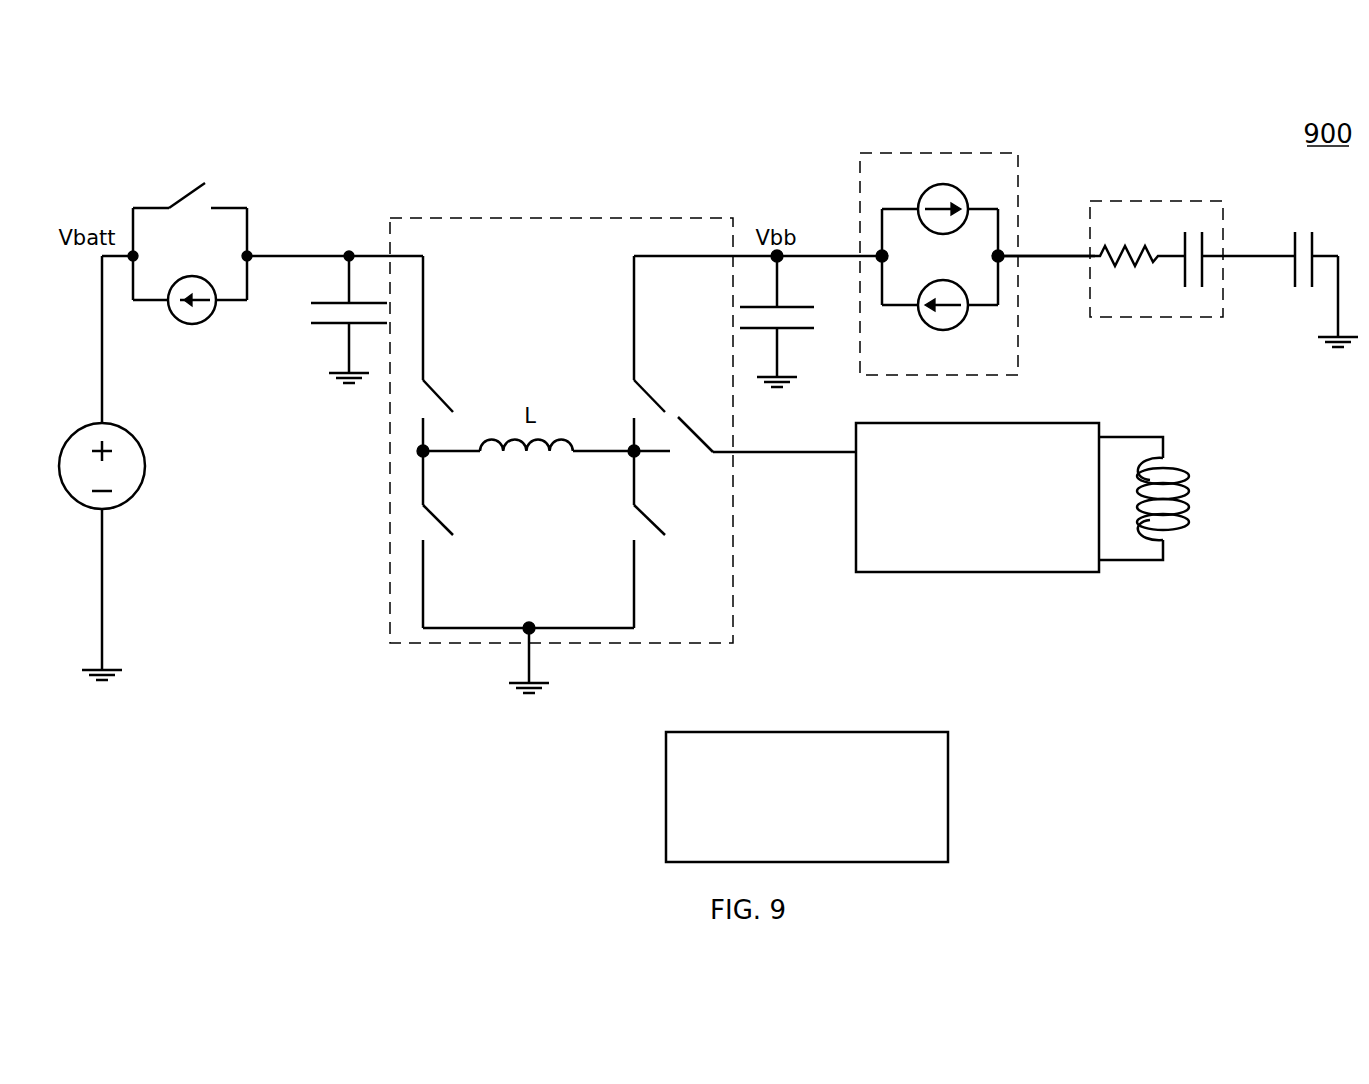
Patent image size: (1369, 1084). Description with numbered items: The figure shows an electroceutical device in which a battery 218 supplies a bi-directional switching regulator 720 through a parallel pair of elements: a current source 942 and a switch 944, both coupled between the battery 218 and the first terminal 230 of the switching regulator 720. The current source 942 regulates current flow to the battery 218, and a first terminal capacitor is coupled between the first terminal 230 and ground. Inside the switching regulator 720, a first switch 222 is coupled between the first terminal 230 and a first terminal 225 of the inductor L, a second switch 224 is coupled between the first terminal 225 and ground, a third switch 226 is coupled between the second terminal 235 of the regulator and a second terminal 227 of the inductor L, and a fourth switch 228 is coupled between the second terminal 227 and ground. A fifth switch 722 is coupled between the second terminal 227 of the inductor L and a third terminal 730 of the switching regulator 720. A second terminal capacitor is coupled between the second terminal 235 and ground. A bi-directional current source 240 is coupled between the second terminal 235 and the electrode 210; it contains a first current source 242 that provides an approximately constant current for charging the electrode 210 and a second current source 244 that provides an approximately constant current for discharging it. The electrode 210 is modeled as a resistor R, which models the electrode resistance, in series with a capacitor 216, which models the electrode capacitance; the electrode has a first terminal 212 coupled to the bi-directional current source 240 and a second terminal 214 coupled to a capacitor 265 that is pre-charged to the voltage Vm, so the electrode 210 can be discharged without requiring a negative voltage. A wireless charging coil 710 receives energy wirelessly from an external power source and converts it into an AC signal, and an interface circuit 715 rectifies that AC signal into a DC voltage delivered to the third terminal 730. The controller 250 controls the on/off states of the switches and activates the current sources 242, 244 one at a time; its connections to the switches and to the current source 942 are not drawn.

The battery 218 is at (122, 427).
The switch 944 is at (212, 184).
The current source 942 is at (185, 327).
The first terminal 230 is at (388, 250).
The switching regulator 720 is at (557, 217).
The first switch 222 is at (434, 375).
The third switch 226 is at (644, 375).
The first terminal of the inductor 225 is at (428, 456).
The second terminal of the inductor 227 is at (630, 457).
The second switch 224 is at (442, 510).
The fourth switch 228 is at (641, 496).
The fifth switch 722 is at (691, 416).
The third terminal 730 is at (737, 455).
The second terminal 235 is at (735, 250).
The bi-directional current source 240 is at (949, 245).
The first current source 242 is at (928, 190).
The second current source 244 is at (935, 330).
The first terminal of the electrode 212 is at (1090, 254).
The electrode 210 is at (1156, 284).
The capacitor 216 is at (1158, 274).
The second terminal of the electrode 214 is at (1224, 254).
The capacitor 265 is at (1285, 234).
The interface circuit 715 is at (1052, 423).
The wireless charging coil 710 is at (1173, 452).
The controller 250 is at (883, 727).